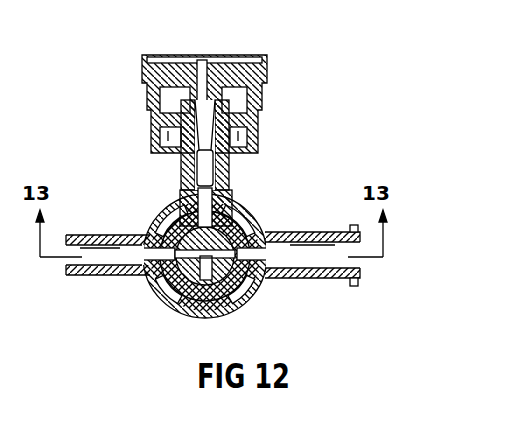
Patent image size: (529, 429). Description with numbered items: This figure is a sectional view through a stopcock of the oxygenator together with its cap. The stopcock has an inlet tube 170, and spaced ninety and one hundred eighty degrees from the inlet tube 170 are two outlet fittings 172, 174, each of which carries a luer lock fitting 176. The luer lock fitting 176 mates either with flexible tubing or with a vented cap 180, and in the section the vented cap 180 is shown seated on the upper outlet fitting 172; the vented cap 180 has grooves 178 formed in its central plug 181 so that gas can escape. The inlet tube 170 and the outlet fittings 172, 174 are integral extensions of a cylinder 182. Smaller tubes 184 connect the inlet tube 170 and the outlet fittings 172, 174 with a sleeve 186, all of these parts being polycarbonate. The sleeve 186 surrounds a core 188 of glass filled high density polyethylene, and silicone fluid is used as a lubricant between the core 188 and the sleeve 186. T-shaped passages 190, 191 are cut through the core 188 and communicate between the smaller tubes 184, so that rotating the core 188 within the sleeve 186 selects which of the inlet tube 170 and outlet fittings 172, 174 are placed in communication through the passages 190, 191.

The inlet tube 170 is at (87, 235).
The outlet fitting 172 is at (180, 176).
The outlet fitting 174 is at (307, 233).
The luer lock fitting 176 is at (168, 119).
The grooves 178 is at (167, 102).
The vented cap 180 is at (267, 73).
The central plug 181 is at (227, 184).
The cylinder 182 is at (148, 287).
The smaller tubes 184 is at (161, 222).
The sleeve 186 is at (148, 293).
The core 188 is at (250, 288).
The T-shaped passage 190 is at (187, 297).
The T-shaped passage 191 is at (223, 293).